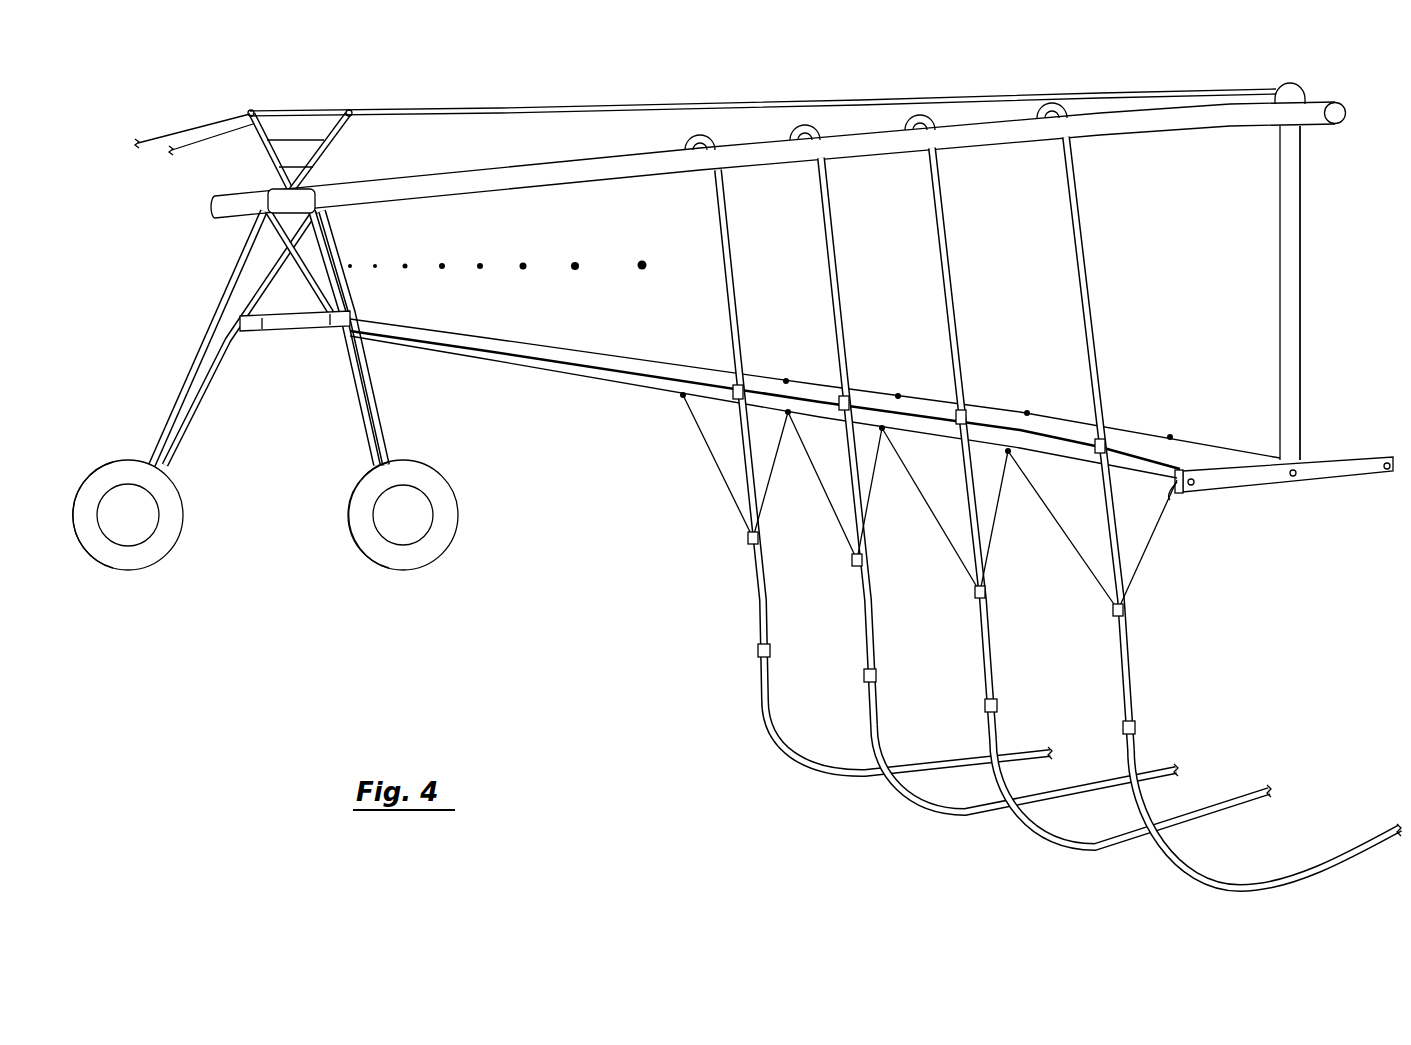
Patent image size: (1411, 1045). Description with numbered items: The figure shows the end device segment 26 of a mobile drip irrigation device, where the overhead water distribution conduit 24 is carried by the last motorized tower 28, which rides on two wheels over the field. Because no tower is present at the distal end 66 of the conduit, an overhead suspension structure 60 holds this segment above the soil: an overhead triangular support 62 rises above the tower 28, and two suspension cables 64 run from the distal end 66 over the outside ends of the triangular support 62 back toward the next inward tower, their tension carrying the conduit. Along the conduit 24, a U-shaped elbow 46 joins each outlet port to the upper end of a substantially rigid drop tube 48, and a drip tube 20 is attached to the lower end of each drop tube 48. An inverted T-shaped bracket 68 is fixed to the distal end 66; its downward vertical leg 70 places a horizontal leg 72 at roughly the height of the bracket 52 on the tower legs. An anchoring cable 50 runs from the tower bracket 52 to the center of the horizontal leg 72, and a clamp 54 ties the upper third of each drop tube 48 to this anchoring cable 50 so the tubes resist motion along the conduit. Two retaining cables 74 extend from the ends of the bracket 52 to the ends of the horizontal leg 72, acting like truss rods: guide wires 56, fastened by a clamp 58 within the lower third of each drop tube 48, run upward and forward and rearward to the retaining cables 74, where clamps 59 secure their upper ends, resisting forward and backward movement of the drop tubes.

The drip tube 20 is at (809, 755).
The water distribution conduit 24 is at (547, 186).
The device segment 26 is at (810, 82).
The motorized tower 28 is at (201, 397).
The U-shaped elbow 46 is at (686, 145).
The drop tube 48 is at (737, 290).
The anchoring cable 50 is at (513, 343).
The bracket 52 is at (281, 332).
The clamp 54 is at (735, 386).
The guide wire 56 is at (720, 478).
The clamp 58 is at (748, 542).
The clamp 59 is at (786, 380).
The overhead suspension structure 60 is at (510, 100).
The overhead triangular support 62 is at (297, 108).
The suspension cable 64 is at (201, 140).
The distal end 66 is at (1338, 103).
The inverted T-shaped bracket 68 is at (1305, 262).
The vertical leg 70 is at (1301, 314).
The horizontal leg 72 is at (1340, 473).
The retaining cable 74 is at (620, 360).